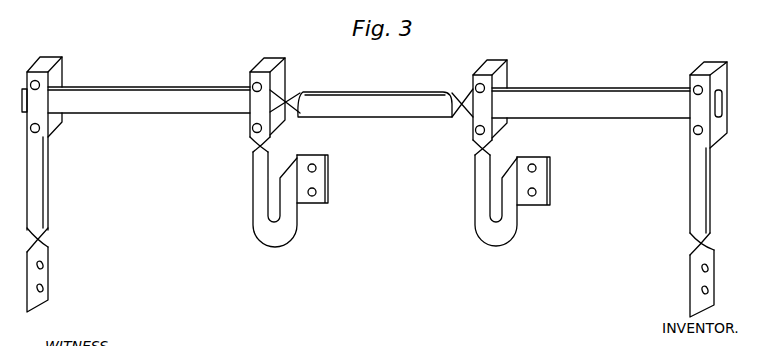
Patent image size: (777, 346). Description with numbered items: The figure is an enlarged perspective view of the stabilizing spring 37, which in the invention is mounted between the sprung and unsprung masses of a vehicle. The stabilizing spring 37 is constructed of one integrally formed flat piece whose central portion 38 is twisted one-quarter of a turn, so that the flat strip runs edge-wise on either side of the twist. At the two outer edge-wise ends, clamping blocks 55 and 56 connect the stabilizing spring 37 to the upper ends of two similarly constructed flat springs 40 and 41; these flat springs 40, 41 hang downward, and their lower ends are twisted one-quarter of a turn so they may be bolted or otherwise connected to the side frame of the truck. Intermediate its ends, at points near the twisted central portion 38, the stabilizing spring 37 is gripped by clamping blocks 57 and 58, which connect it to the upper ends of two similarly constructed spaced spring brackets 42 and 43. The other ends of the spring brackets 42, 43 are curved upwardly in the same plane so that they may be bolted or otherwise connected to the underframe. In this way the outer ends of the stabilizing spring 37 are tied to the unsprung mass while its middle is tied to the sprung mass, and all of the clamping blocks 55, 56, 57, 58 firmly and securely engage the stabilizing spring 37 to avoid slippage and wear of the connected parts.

The stabilizing spring 37 is at (126, 108).
The central portion 38 is at (379, 102).
The flat spring 40 is at (36, 196).
The flat spring 41 is at (700, 207).
The spring bracket 42 is at (272, 238).
The spring bracket 43 is at (503, 238).
The clamping block 55 is at (58, 75).
The clamping block 56 is at (725, 78).
The clamping block 57 is at (279, 78).
The clamping block 58 is at (498, 80).